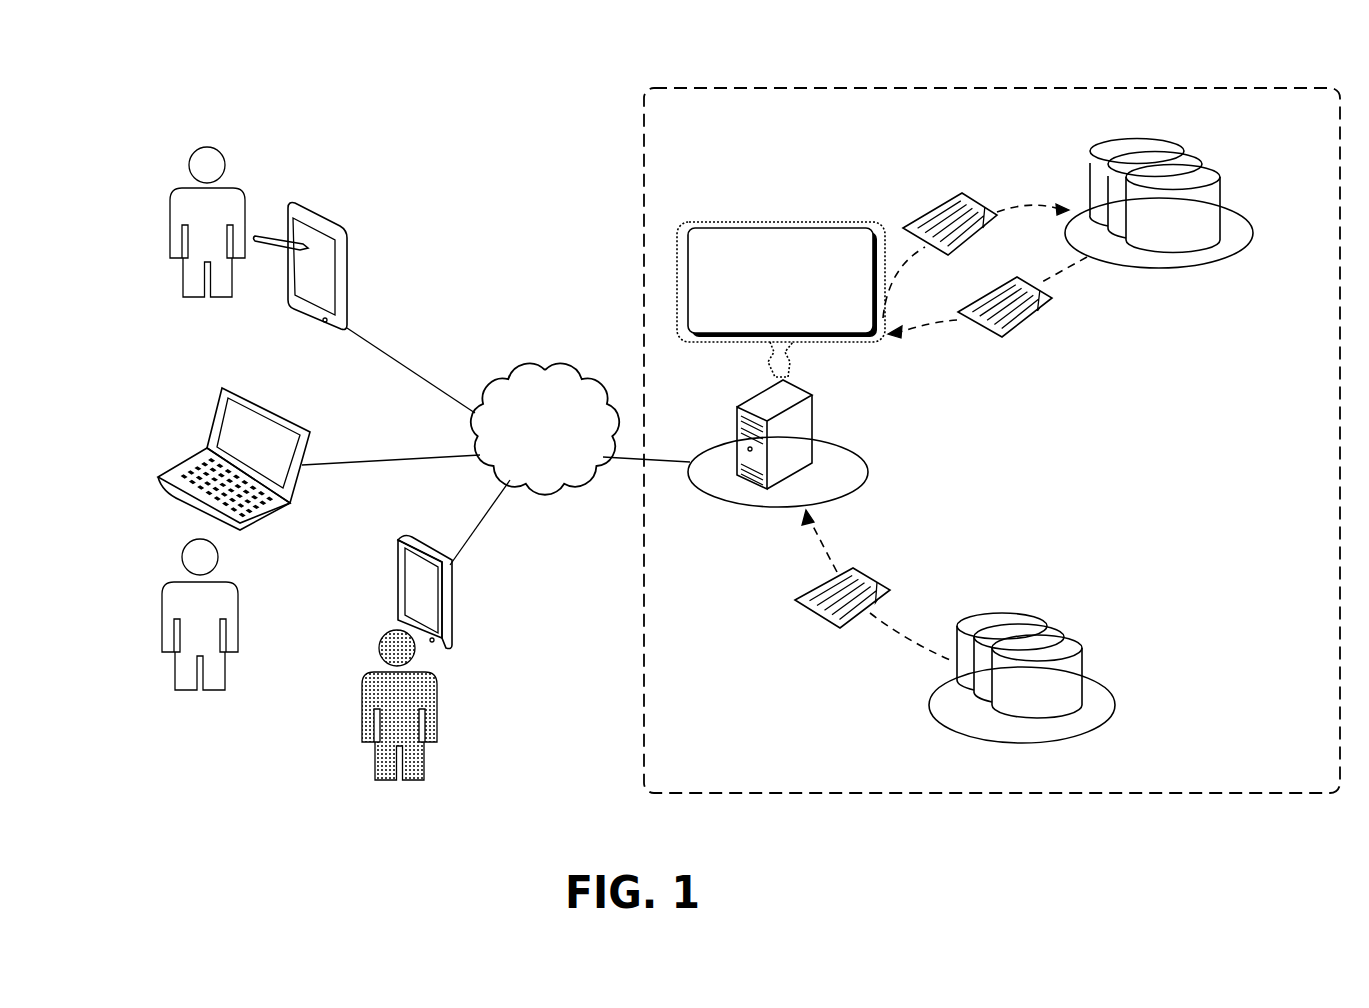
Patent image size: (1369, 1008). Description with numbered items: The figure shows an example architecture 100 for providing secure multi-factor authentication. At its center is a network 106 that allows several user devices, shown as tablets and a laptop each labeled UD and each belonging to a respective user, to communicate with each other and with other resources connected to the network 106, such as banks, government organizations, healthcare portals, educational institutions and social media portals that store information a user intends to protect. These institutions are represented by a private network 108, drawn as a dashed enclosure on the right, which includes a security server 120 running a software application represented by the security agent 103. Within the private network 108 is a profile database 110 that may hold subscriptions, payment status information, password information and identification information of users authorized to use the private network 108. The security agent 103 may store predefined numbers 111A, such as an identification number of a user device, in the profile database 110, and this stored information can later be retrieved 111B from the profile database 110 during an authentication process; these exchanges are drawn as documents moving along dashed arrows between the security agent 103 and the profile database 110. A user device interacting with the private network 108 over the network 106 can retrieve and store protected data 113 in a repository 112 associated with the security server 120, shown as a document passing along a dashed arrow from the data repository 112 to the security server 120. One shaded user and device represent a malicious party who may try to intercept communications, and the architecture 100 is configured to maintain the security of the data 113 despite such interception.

The architecture 100 is at (133, 44).
The security agent 103 is at (781, 299).
The network 106 is at (500, 382).
The private network 108 is at (992, 440).
The profile database 110 is at (1232, 200).
The predefined numbers 111A is at (947, 202).
The retrieved stored information 111B is at (1027, 327).
The repository 112 is at (1110, 685).
The protected data 113 is at (868, 572).
The security server 120 is at (750, 403).